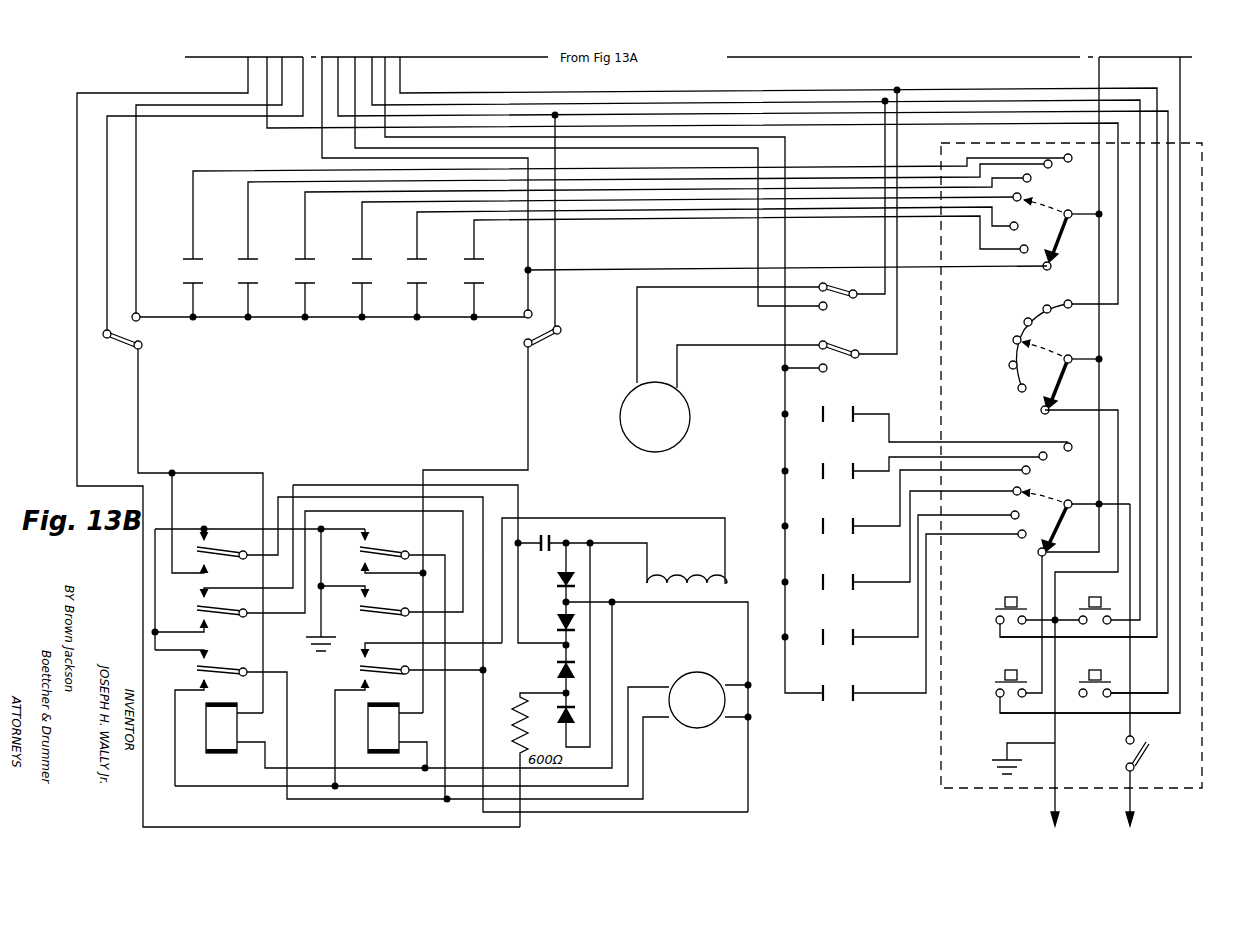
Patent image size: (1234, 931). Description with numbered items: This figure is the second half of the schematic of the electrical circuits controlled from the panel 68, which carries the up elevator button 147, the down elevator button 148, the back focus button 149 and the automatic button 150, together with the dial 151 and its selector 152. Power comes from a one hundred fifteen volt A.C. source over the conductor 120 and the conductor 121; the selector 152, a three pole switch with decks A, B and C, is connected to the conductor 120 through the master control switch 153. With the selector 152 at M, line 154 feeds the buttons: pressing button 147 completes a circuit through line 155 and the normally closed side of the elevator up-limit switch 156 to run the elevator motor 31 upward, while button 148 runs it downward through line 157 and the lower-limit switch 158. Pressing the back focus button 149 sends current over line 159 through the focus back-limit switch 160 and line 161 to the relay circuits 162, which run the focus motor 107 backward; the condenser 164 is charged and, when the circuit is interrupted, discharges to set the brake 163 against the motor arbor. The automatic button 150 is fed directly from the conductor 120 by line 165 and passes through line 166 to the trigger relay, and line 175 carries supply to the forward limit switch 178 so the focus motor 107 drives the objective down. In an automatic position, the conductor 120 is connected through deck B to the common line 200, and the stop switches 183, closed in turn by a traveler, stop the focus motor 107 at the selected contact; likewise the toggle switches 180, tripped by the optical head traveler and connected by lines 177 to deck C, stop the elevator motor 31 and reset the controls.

The common line 200 is at (288, 130).
The focus stop switches 183 is at (197, 262).
The forward limit switch 178 is at (128, 347).
The focus back-limit switch 160 is at (545, 340).
The elevator up-limit switch 156 is at (832, 283).
The lower-limit switch 158 is at (805, 352).
The elevator motor 31 is at (689, 440).
The toggle switches 180 is at (826, 456).
The line 157 is at (812, 100).
The line 159 is at (640, 118).
The line 175 is at (1098, 66).
The dial 151 is at (1018, 288).
The selector 152 is at (1060, 238).
The lines 177 is at (988, 492).
The panel 68 is at (940, 778).
The up elevator button 147 is at (1014, 597).
The down elevator button 148 is at (1085, 600).
The line 154 is at (1090, 572).
The line 155 is at (999, 626).
The automatic button 150 is at (1008, 674).
The line 166 is at (998, 706).
The line 165 is at (1034, 700).
The back focus button 149 is at (1100, 686).
The master control switch 153 is at (1148, 756).
The conductor 121 is at (1052, 806).
The conductor 120 is at (1135, 804).
The relay circuits 162 is at (342, 478).
The line 161 is at (457, 468).
The brake 163 is at (726, 588).
The condenser 164 is at (546, 530).
The focus motor 107 is at (699, 709).